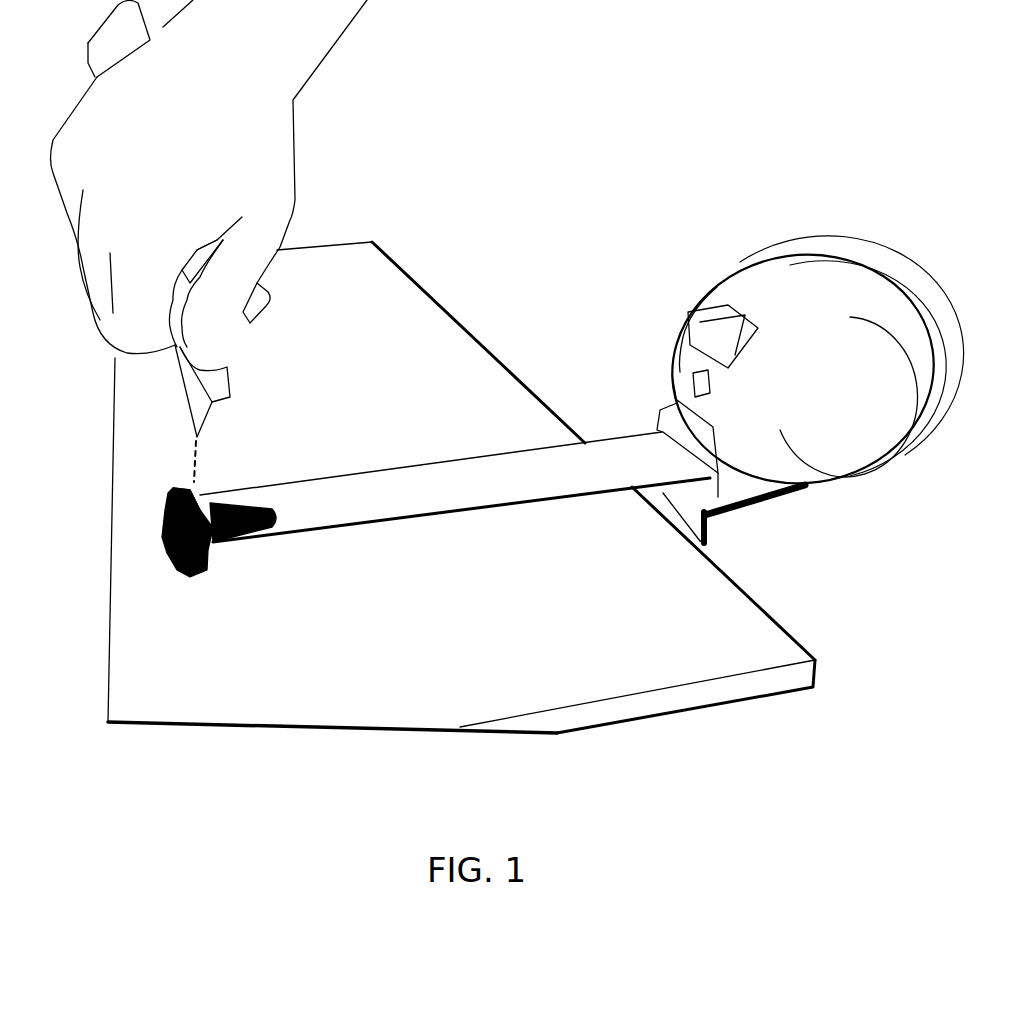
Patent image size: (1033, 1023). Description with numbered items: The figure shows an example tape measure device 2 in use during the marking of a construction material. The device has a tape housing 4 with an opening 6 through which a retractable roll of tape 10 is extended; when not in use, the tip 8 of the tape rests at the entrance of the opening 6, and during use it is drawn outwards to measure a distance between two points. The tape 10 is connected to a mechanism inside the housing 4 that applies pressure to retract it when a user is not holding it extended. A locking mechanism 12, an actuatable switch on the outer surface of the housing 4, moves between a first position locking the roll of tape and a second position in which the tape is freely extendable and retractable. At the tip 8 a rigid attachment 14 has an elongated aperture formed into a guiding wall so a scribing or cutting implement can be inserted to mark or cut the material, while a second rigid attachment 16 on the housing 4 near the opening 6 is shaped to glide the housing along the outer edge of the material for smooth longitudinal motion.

The tape measure device 2 is at (582, 380).
The tape housing 4 is at (852, 273).
The opening 6 is at (710, 487).
The tip 8 is at (217, 565).
The tape 10 is at (423, 503).
The locking mechanism 12 is at (698, 337).
The rigid attachment 14 is at (172, 523).
The second rigid attachment 16 is at (725, 535).